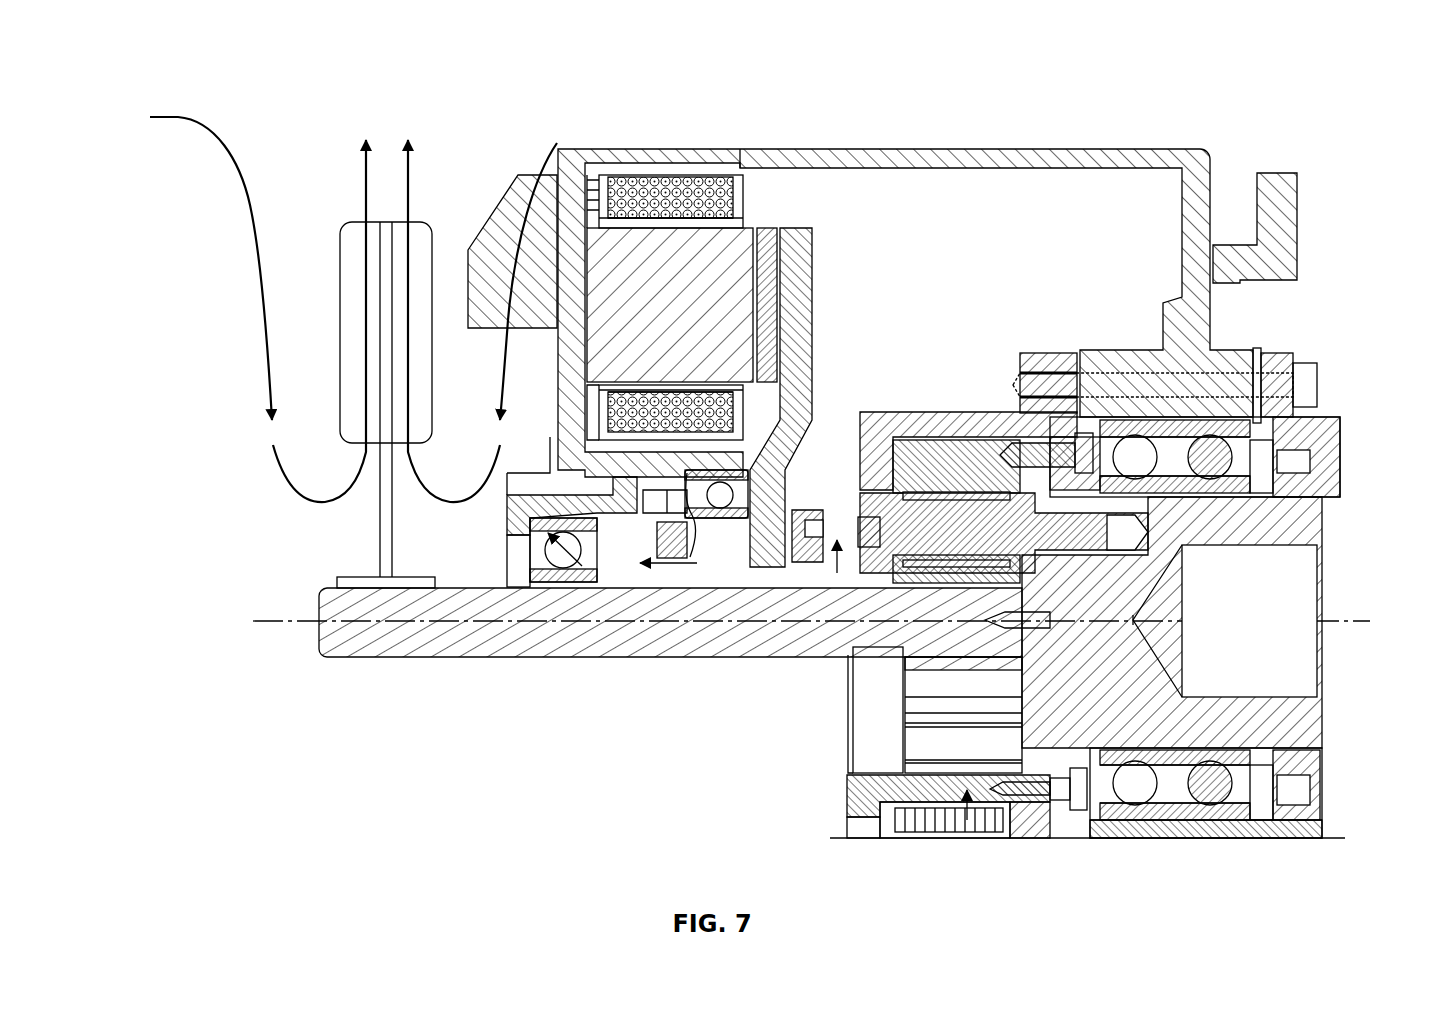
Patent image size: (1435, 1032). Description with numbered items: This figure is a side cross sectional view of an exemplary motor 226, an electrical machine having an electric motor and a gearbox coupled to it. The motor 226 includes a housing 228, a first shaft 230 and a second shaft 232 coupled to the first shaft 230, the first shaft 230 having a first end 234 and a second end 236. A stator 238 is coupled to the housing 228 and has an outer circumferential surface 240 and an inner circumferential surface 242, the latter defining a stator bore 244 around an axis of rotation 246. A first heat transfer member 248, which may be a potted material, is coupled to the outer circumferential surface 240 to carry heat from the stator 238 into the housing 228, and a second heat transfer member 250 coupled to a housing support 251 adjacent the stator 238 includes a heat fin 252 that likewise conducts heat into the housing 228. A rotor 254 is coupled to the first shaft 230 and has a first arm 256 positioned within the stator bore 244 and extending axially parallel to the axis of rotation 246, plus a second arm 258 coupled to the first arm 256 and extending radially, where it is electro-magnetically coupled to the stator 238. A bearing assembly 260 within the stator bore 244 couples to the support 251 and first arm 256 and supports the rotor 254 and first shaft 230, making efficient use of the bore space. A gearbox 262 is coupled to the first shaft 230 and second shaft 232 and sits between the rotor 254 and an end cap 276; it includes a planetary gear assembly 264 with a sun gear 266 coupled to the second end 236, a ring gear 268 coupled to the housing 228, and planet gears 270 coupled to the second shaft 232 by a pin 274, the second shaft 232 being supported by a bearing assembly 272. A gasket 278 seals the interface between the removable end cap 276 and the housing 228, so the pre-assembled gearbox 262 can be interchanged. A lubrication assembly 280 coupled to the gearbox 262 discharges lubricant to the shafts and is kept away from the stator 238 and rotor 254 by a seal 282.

The motor 226 is at (1243, 88).
The housing 228 is at (1140, 155).
The first shaft 230 is at (505, 642).
The second shaft 232 is at (1310, 725).
The first end 234 is at (355, 642).
The second end 236 is at (905, 636).
The stator 238 is at (640, 257).
The outer circumferential surface 240 is at (742, 152).
The inner circumferential surface 242 is at (655, 425).
The stator bore 244 is at (653, 433).
The axis of rotation 246 is at (1343, 621).
The first heat transfer member 248 is at (704, 177).
The second heat transfer member 250 is at (485, 233).
The heat fin 252 is at (486, 236).
The housing support 251 is at (560, 143).
The rotor 254 is at (807, 300).
The first arm 256 is at (700, 550).
The second arm 258 is at (800, 360).
The bearing assembly 260 is at (720, 510).
The gearbox 262 is at (965, 838).
The planetary gear assembly 264 is at (1040, 510).
The sun gear 266 is at (963, 578).
The ring gear 268 is at (920, 450).
The planet gears 270 is at (1008, 796).
The bearing assembly 272 is at (1213, 460).
The pin 274 is at (1135, 620).
The end cap 276 is at (1320, 448).
The gasket 278 is at (1262, 350).
The lubrication assembly 280 is at (837, 576).
The seal 282 is at (806, 545).